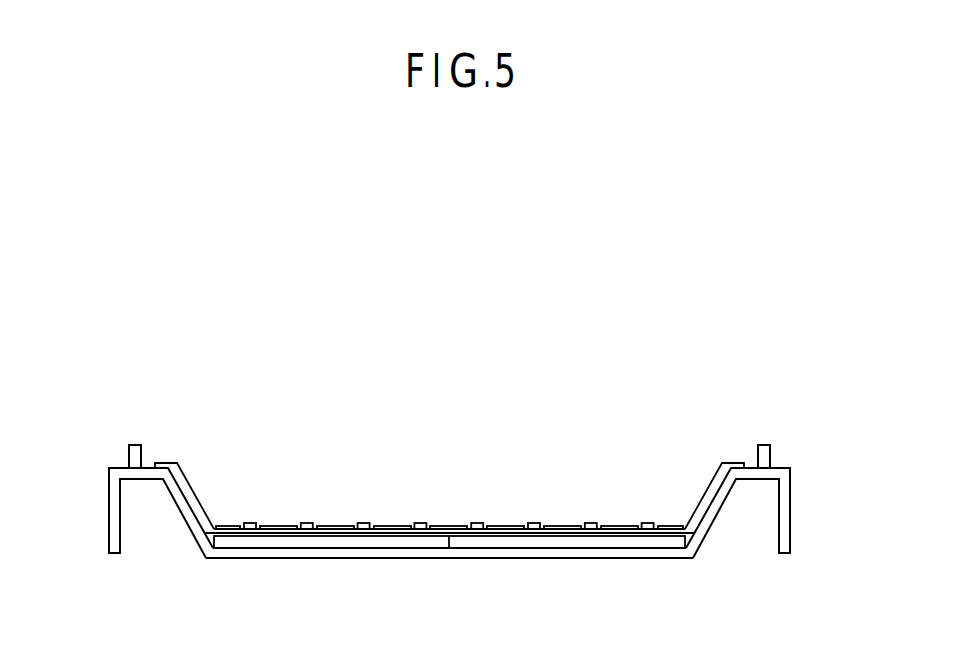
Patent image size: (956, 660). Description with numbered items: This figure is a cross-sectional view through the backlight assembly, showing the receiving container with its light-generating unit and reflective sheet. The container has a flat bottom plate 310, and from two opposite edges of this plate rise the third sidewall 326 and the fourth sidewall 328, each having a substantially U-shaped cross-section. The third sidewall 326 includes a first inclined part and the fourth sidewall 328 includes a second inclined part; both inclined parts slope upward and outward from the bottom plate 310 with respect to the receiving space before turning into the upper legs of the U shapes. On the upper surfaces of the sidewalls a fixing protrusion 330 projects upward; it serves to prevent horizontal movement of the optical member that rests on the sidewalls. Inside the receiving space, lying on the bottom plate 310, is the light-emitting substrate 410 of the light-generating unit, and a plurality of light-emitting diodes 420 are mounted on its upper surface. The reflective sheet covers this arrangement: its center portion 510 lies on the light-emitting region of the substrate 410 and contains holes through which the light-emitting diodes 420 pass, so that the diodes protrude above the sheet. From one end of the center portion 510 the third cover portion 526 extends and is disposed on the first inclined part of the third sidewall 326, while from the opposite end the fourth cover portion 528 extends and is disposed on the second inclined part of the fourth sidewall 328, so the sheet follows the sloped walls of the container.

The bottom plate 310 is at (451, 507).
The third sidewall 326 is at (792, 512).
The fourth sidewall 328 is at (112, 512).
The fixing protrusion 330 is at (133, 435).
The light-emitting substrate 410 is at (533, 540).
The light-emitting diodes 420 is at (477, 522).
The center portion 510 is at (449, 467).
The third cover portion 526 is at (691, 505).
The fourth cover portion 528 is at (190, 497).